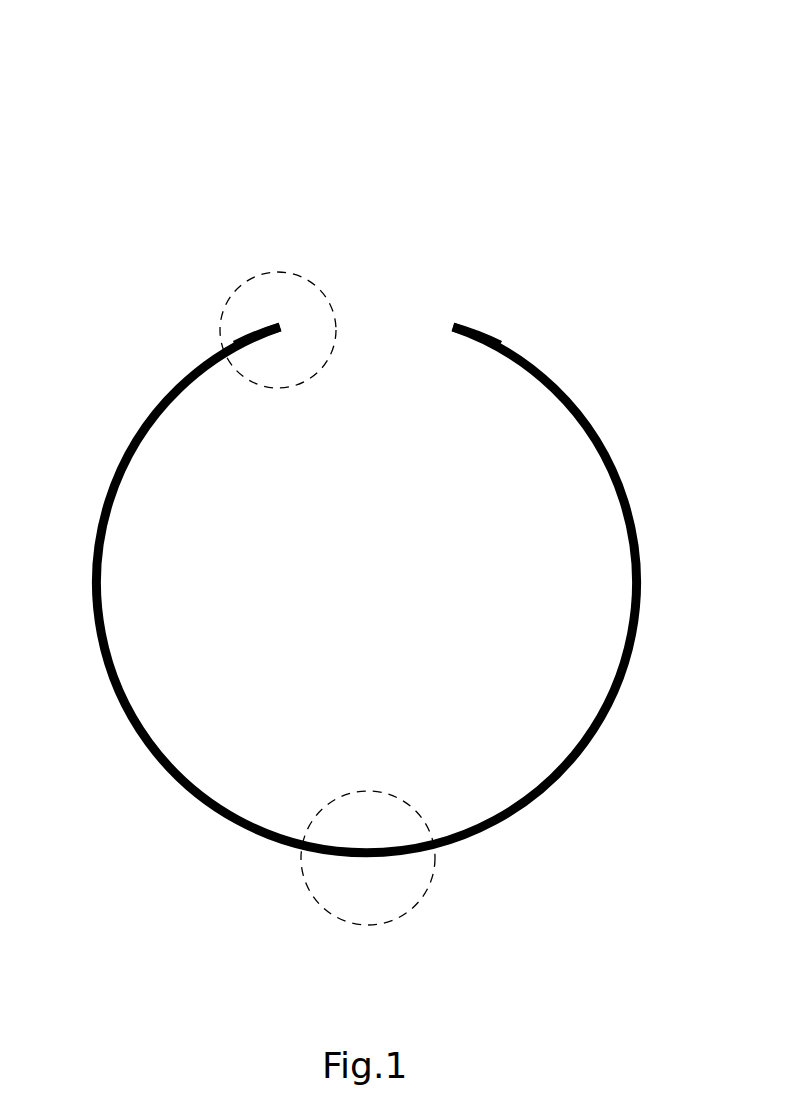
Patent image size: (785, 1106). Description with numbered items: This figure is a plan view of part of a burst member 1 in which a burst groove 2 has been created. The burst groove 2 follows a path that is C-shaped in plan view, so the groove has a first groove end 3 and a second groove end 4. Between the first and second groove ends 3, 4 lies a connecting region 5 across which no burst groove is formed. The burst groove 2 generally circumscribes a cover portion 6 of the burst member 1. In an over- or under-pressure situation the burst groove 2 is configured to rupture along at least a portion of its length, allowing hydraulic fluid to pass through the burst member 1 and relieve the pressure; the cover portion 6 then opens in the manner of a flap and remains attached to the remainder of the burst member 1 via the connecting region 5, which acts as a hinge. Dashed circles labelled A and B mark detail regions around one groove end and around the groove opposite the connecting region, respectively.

The burst member 1 is at (473, 227).
The burst groove 2 is at (550, 384).
The first groove end 3 is at (278, 327).
The second groove end 4 is at (455, 326).
The connecting region 5 is at (360, 323).
The cover portion 6 is at (398, 595).
The detail region A is at (267, 278).
The detail region B is at (420, 898).